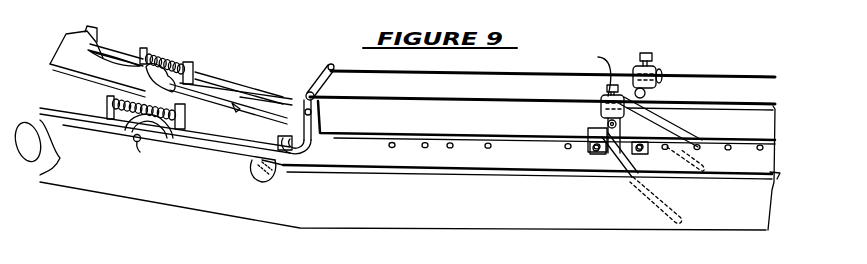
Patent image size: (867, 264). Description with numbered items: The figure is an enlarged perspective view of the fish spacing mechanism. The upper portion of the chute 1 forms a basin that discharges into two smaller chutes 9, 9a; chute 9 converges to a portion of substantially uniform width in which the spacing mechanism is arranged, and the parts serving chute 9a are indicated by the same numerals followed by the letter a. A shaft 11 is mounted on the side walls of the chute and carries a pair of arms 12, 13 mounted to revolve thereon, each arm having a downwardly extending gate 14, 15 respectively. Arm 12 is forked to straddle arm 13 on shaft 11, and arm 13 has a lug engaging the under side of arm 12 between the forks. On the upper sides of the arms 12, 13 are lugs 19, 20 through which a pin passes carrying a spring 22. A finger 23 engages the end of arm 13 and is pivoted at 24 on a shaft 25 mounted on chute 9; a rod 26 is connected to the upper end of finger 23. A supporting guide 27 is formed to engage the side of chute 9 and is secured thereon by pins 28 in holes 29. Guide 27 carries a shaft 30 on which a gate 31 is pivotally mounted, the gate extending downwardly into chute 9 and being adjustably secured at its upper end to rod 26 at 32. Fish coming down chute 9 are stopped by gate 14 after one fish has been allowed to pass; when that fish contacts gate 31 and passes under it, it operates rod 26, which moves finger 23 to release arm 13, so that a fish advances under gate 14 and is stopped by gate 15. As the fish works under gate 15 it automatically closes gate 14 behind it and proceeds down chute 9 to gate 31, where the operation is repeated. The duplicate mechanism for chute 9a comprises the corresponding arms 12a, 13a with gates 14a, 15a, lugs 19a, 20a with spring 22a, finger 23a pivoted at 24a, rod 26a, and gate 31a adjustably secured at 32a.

The chute 1 is at (226, 211).
The chute 9 is at (775, 175).
The chute 9a is at (786, 170).
The shaft 11 is at (148, 152).
The arm 12 is at (66, 113).
The arm 12a is at (112, 52).
The arm 13 is at (220, 137).
The arm 13a is at (240, 106).
The gate 14 is at (73, 153).
The gate 14a is at (64, 53).
The gate 15 is at (252, 166).
The gate 15a is at (258, 97).
The lug 19 is at (108, 105).
The lug 19a is at (146, 55).
The lug 20 is at (186, 115).
The lug 20a is at (200, 74).
The spring 22 is at (140, 138).
The spring 22a is at (168, 70).
The finger 23 is at (302, 144).
The finger 23a is at (333, 103).
The pivot 24 is at (330, 147).
The pivot 24a is at (335, 68).
The shaft 25 is at (322, 92).
The rod 26 is at (452, 103).
The rod 26a is at (478, 75).
The supporting guide 27 is at (588, 130).
The pins 28 is at (598, 145).
The holes 29 is at (565, 148).
The shaft 30 is at (606, 112).
The gate 31 is at (630, 167).
The gate 31a is at (676, 129).
The adjustable connection 32 is at (591, 74).
The adjustable connection 32a is at (655, 68).